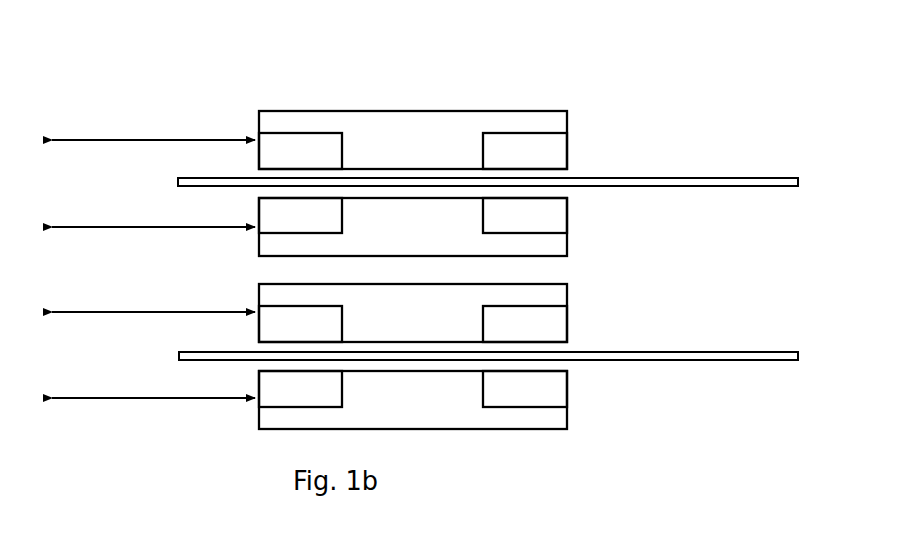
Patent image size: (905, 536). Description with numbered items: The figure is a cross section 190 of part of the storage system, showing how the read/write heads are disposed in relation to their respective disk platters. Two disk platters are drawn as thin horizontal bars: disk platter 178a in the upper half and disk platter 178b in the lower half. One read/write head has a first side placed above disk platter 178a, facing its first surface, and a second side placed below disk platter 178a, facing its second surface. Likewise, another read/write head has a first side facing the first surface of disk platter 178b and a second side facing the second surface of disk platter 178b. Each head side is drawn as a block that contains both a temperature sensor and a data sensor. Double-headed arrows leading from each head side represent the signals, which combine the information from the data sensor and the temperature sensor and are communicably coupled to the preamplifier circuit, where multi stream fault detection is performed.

The cross section 190 is at (503, 89).
The disk platter 178a is at (643, 178).
The disk platter 178b is at (642, 352).